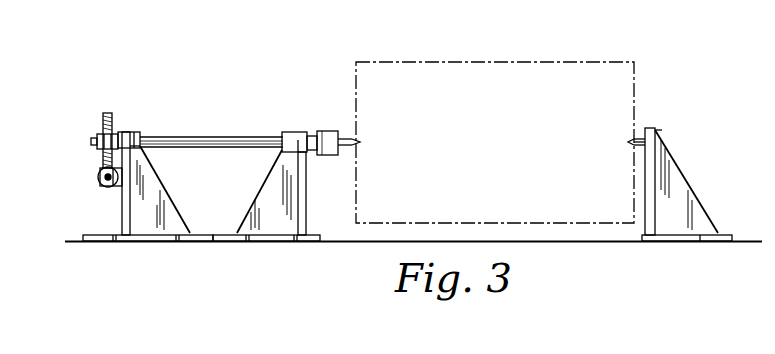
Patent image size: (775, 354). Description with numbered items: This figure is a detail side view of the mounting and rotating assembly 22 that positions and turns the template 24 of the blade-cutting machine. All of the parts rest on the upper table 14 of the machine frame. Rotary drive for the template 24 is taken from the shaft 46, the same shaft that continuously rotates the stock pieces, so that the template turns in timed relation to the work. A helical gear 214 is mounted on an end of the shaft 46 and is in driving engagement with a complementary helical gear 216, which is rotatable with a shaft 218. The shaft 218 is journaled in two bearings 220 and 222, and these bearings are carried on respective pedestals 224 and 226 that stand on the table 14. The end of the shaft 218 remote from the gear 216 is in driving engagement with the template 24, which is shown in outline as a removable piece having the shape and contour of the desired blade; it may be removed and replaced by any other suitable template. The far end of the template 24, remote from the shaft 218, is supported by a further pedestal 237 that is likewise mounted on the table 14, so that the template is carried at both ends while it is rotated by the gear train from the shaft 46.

The upper table 14 is at (72, 241).
The mounting and rotating assembly 22 is at (172, 194).
The template 24 is at (494, 62).
The shaft 46 is at (99, 172).
The helical gear 214 is at (100, 183).
The complementary helical gear 216 is at (107, 112).
The shaft 218 is at (216, 138).
The bearing 220 is at (138, 132).
The bearing 222 is at (296, 132).
The pedestal 224 is at (153, 235).
The pedestal 226 is at (273, 235).
The pedestal 237 is at (678, 182).